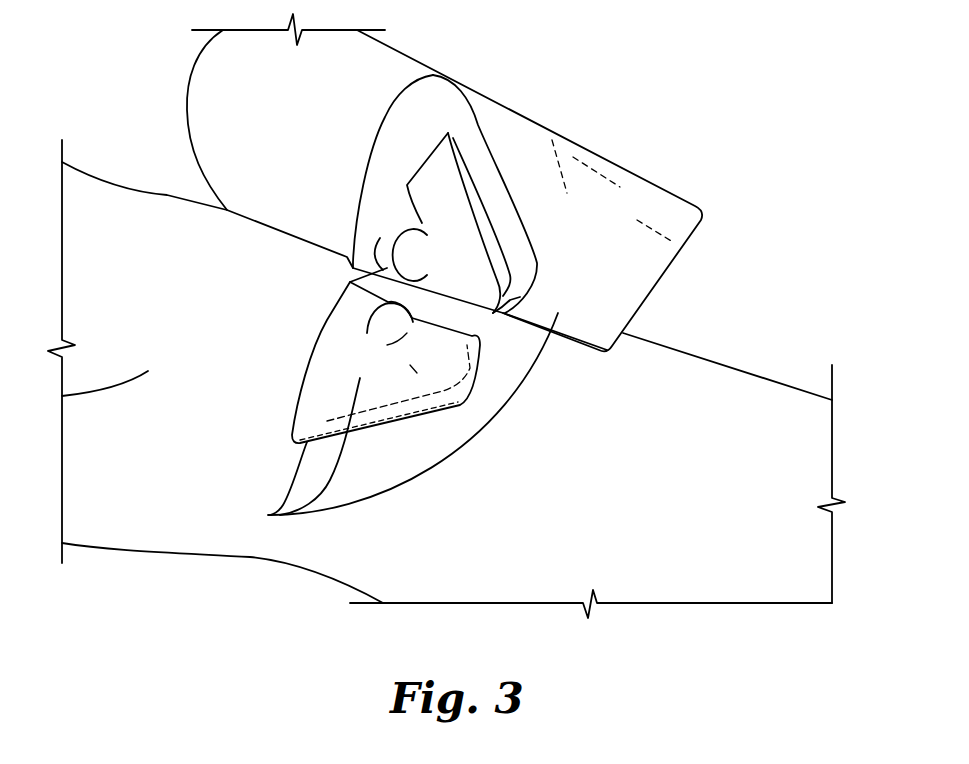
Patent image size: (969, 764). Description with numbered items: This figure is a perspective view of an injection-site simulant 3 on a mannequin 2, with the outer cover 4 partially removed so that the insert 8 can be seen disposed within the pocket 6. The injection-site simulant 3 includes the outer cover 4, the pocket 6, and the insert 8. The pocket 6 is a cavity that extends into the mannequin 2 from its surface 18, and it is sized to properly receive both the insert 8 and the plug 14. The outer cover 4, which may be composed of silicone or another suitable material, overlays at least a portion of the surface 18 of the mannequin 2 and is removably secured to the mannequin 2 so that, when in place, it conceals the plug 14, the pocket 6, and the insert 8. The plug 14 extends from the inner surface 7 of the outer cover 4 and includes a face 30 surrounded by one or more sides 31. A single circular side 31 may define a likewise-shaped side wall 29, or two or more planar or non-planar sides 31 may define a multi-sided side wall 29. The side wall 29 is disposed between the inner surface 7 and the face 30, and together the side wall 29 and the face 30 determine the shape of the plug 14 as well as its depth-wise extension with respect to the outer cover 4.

The mannequin 2 is at (62, 395).
The injection-site simulant 3 is at (400, 422).
The outer cover 4 is at (627, 205).
The pocket 6 is at (328, 318).
The inner surface 7 is at (628, 263).
The insert 8 is at (332, 348).
The plug 14 is at (383, 186).
The surface 18 is at (798, 553).
The side wall 29 is at (460, 98).
The face 30 is at (476, 279).
The sides 31 is at (377, 150).